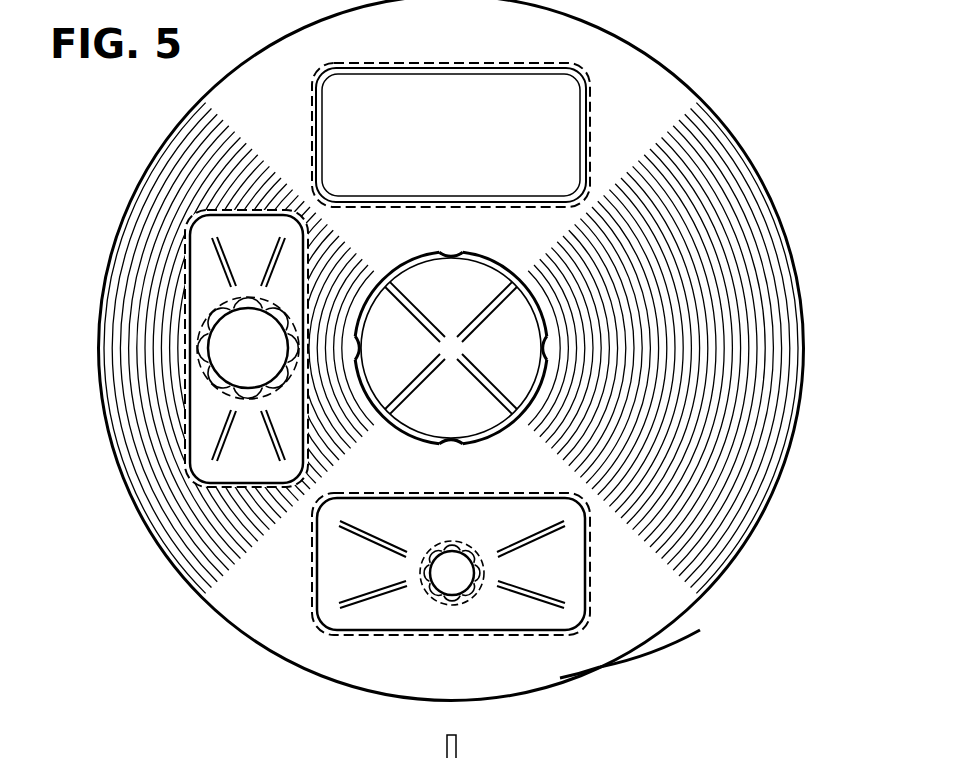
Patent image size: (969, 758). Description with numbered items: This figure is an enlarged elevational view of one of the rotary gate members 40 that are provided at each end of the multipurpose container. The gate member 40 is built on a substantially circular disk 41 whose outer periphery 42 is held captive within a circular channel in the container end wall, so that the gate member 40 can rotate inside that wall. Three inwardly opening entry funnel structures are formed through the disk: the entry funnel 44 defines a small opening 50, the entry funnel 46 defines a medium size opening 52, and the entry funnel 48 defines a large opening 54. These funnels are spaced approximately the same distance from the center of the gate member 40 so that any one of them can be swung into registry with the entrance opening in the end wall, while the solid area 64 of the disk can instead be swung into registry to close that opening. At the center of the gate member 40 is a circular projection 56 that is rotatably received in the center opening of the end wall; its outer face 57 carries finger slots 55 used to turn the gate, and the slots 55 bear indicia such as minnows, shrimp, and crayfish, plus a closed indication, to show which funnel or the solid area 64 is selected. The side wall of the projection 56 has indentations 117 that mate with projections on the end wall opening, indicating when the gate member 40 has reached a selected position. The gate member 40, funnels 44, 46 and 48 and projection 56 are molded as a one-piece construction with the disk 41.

The gate member 40 is at (640, 72).
The disk 41 is at (602, 657).
The outer periphery 42 is at (635, 653).
The entry funnel 44 is at (432, 580).
The entry funnel 46 is at (203, 367).
The entry funnel 48 is at (534, 74).
The small opening 50 is at (441, 544).
The medium size opening 52 is at (215, 343).
The large opening 54 is at (422, 193).
The finger slots 55 is at (438, 262).
The circular projection 56 is at (520, 418).
The outer face 57 is at (513, 422).
The solid area 64 is at (766, 292).
The indentations 117 is at (549, 348).